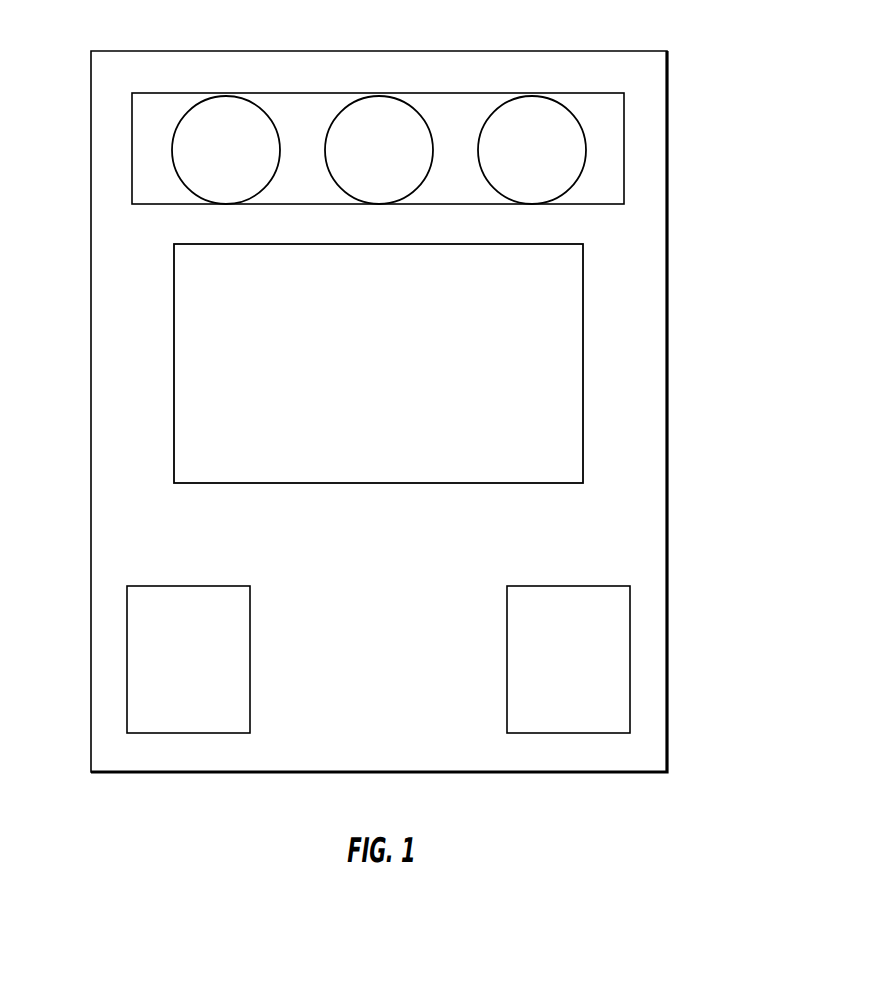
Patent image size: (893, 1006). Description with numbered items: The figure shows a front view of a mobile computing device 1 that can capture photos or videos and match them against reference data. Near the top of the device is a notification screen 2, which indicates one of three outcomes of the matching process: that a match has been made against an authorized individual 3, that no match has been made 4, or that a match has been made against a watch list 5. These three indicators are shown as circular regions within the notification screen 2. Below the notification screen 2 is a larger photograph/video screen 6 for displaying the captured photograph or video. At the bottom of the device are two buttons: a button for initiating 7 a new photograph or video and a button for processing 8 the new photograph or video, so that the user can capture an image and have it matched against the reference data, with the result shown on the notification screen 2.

The mobile computing device 1 is at (630, 250).
The notification screen 2 is at (605, 138).
The authorized individual match indicator 3 is at (540, 132).
The no match indicator 4 is at (383, 117).
The watch list match indicator 5 is at (222, 123).
The photograph/video screen 6 is at (552, 390).
The initiating button 7 is at (572, 650).
The processing button 8 is at (162, 653).